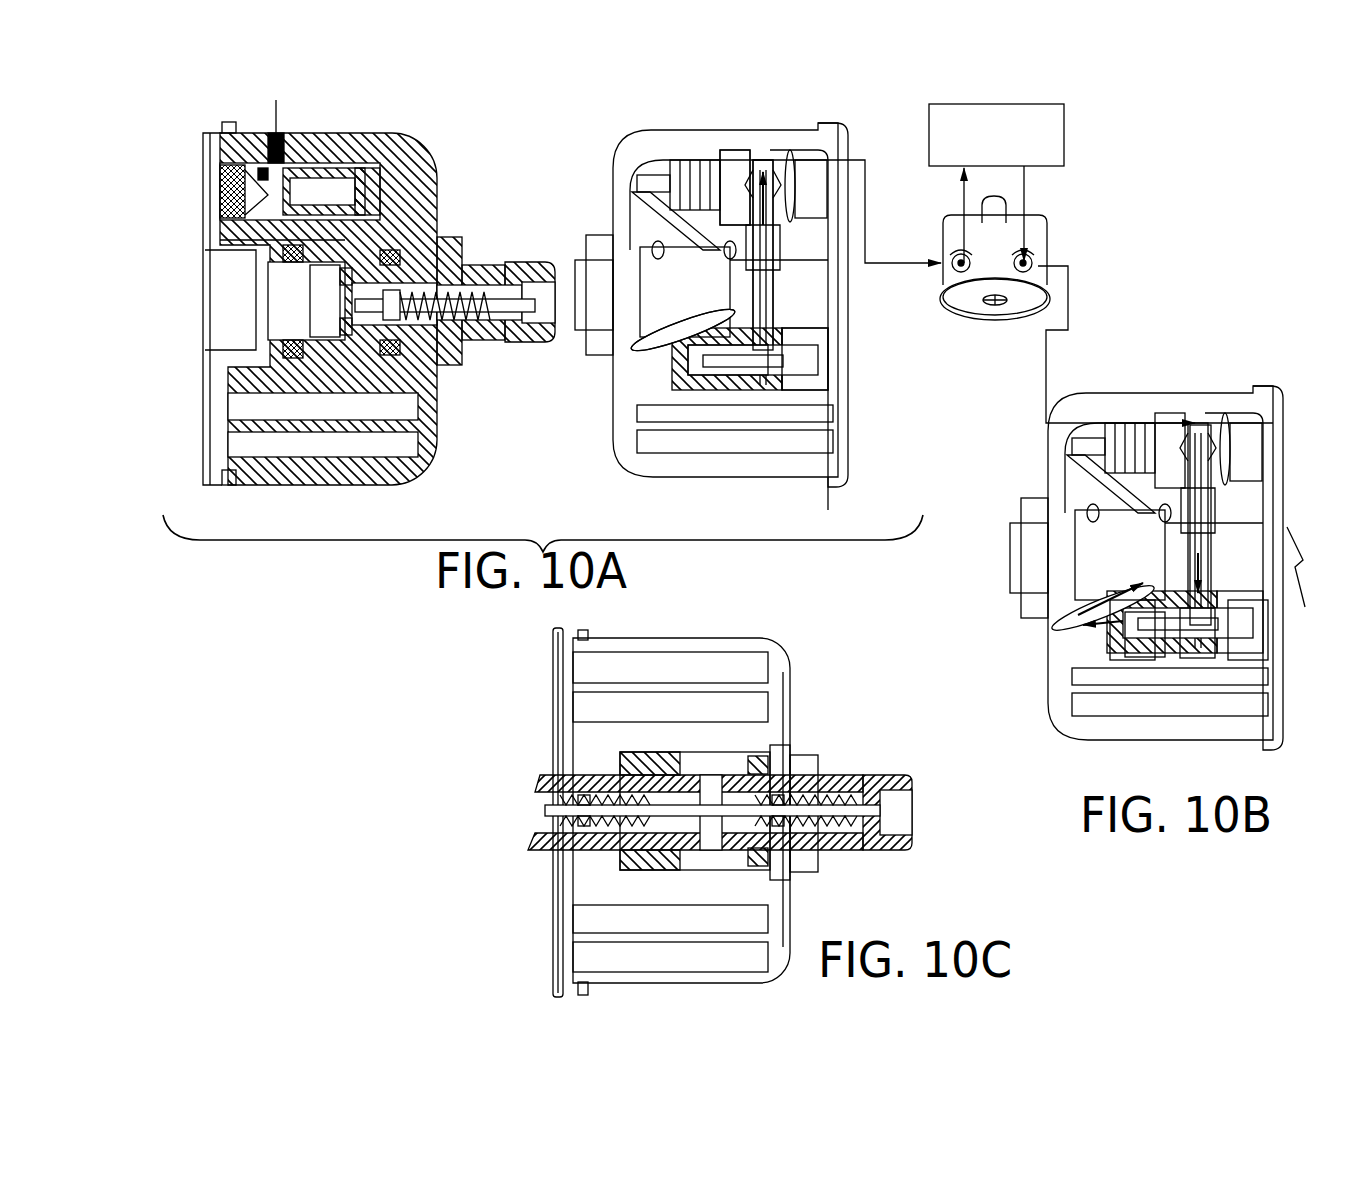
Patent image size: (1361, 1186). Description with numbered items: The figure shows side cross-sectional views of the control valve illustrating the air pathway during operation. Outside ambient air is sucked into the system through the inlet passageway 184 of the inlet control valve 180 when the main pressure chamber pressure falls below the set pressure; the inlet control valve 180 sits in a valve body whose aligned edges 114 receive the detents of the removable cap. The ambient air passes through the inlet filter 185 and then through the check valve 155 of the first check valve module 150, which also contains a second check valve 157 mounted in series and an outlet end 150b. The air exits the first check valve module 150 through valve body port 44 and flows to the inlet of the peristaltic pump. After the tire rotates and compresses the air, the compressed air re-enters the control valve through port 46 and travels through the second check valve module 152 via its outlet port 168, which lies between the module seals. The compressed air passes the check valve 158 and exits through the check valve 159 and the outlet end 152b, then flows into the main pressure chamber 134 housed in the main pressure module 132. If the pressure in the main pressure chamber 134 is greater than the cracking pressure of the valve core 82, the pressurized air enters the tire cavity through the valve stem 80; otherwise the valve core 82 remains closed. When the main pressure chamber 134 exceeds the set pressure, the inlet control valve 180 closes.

In FIG. 10A, the aligned edges 114 is at (230, 128).
In FIG. 10A, the inlet passageway 184 is at (278, 160).
In FIG. 10A, the inlet filter 185 is at (292, 172).
In FIG. 10A, the inlet control valve 180 is at (362, 156).
In FIG. 10A, the main pressure chamber 134 is at (325, 312).
In FIG. 10C, the main pressure chamber 134 is at (770, 812).
In FIG. 10A, the second check valve module 152 is at (703, 154).
In FIG. 10A, the valve body port 44 is at (762, 165).
In FIG. 10A, the port 46 is at (1027, 253).
In FIG. 10B, the port 46 is at (1210, 422).
In FIG. 10A, the outlet end 150b is at (677, 348).
In FIG. 10A, the check valve 157 is at (690, 360).
In FIG. 10A, the first check valve module 150 is at (740, 382).
In FIG. 10B, the first check valve module 150 is at (1242, 412).
In FIG. 10A, the check valve 155 is at (792, 362).
In FIG. 10B, the outlet end 152b is at (1140, 602).
In FIG. 10B, the check valve 159 is at (1135, 635).
In FIG. 10B, the outlet port 168 is at (1193, 635).
In FIG. 10B, the check valve 158 is at (1225, 633).
In FIG. 10C, the valve stem 80 is at (546, 776).
In FIG. 10C, the valve core 82 is at (582, 830).
In FIG. 10C, the main pressure module 132 is at (889, 770).